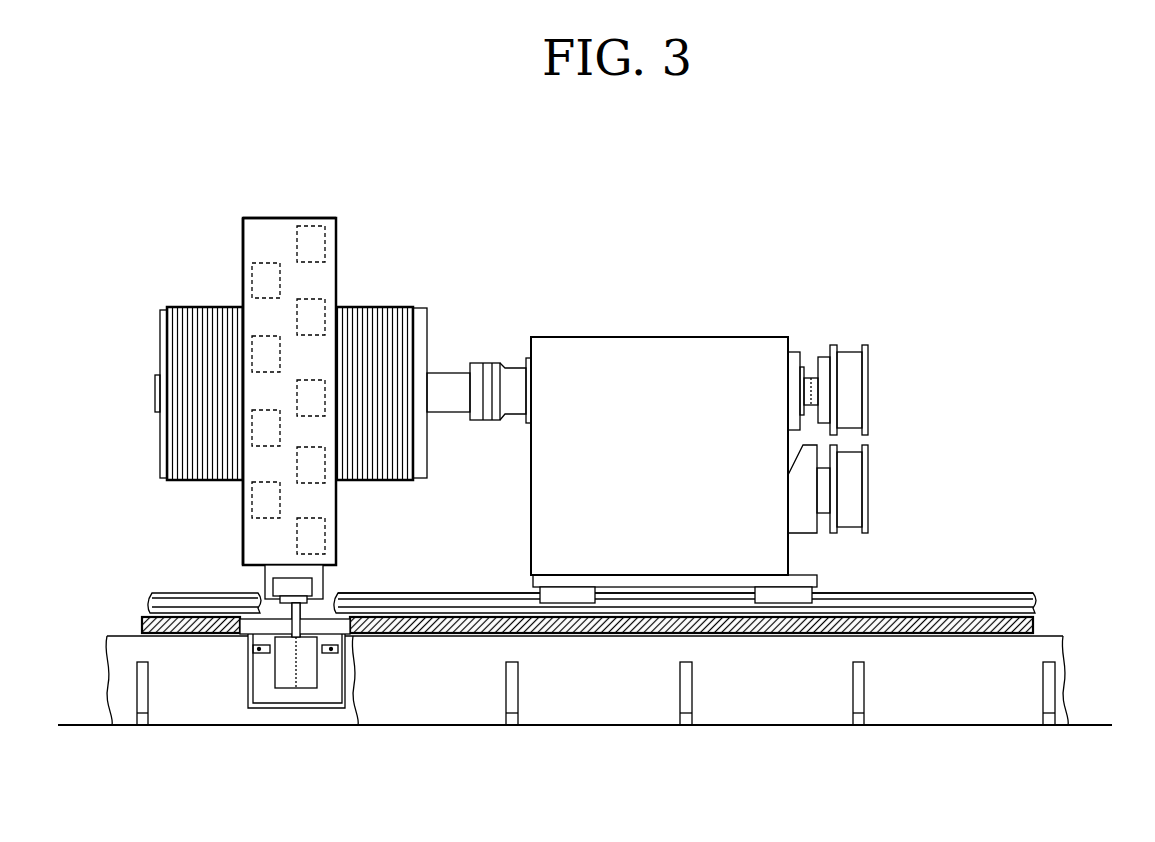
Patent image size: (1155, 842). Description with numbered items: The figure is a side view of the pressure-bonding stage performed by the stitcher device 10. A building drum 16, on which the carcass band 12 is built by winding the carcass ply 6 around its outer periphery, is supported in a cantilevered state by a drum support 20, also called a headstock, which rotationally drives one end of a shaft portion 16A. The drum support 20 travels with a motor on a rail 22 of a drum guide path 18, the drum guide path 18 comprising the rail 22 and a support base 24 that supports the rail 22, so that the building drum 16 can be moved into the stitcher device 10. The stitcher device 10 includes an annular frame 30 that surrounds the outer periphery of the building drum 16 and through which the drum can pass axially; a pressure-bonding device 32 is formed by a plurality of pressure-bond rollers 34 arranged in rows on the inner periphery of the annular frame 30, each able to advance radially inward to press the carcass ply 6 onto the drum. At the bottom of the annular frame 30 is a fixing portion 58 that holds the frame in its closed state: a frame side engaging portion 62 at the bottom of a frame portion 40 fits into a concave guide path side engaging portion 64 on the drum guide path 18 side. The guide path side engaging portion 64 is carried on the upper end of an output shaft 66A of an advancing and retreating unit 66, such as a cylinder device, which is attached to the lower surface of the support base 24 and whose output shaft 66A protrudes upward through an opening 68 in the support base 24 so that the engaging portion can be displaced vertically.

The carcass ply 6 is at (195, 307).
The carcass band 12 is at (272, 357).
The stitcher device 10 is at (355, 217).
The building drum 16 is at (422, 307).
The shaft portion 16A is at (452, 372).
The drum guide path 18 is at (1023, 582).
The drum support 20 is at (655, 337).
The rail 22 is at (925, 594).
The support base 24 is at (1036, 598).
The annular frame 30 is at (336, 272).
The pressure-bonding device 32 is at (265, 356).
The pressure-bond rollers 34 is at (297, 240).
The frame portion 40 is at (243, 508).
The fixing portion 58 is at (289, 578).
The frame side engaging portion 62 is at (323, 578).
The guide path side engaging portion 64 is at (312, 593).
The advancing and retreating unit 66 is at (290, 683).
The output shaft 66A is at (258, 650).
The opening 68 is at (330, 625).